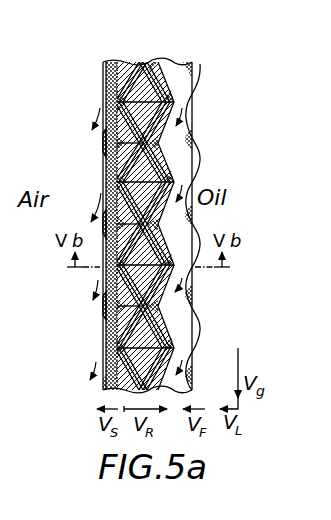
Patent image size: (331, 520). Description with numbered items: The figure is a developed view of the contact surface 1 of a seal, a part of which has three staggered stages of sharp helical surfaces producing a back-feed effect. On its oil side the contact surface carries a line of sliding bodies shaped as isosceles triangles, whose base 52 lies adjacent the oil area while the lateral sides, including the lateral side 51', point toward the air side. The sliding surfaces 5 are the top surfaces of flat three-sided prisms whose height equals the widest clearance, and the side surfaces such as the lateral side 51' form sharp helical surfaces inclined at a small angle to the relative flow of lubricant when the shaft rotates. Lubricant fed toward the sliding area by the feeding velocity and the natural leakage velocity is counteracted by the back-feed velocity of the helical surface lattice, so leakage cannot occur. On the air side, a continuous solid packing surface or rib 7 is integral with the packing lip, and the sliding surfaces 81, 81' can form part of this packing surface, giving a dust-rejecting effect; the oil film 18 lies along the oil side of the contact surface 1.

The contact surface 1 is at (173, 66).
The packing surface or rib 7 is at (116, 177).
The sliding surface 81 is at (88, 226).
The sliding surface 81' is at (75, 259).
The oil film 18 is at (193, 117).
The sliding surface 5 is at (195, 307).
The lateral side 51' is at (211, 226).
The base 52 is at (195, 309).